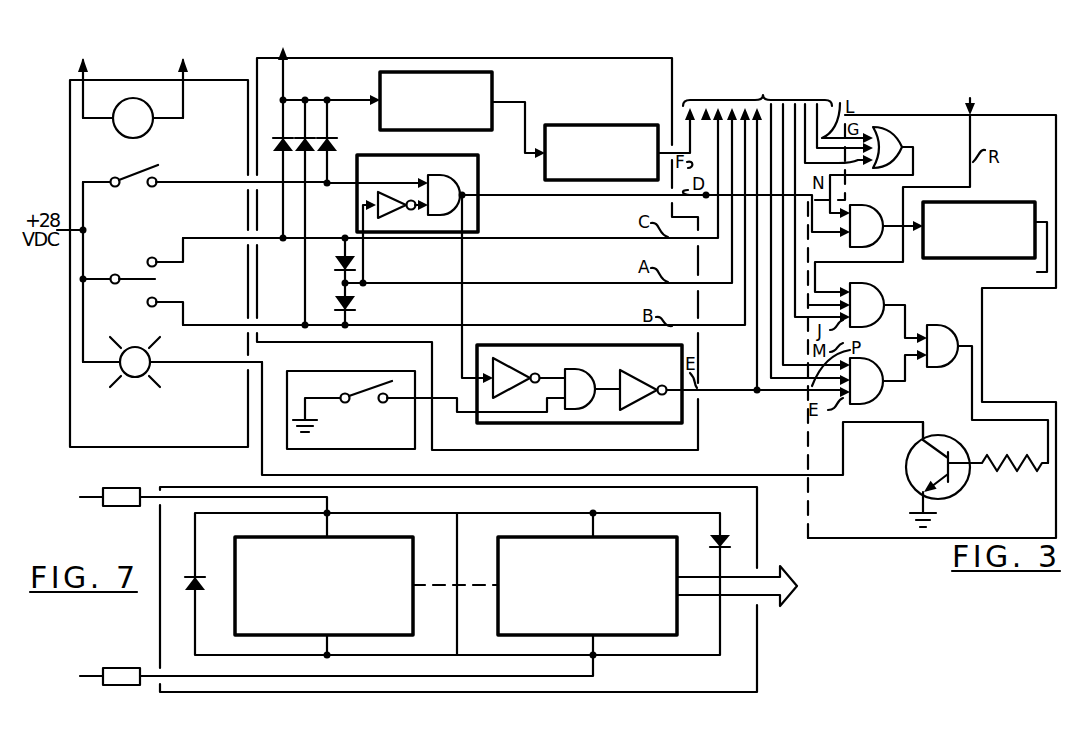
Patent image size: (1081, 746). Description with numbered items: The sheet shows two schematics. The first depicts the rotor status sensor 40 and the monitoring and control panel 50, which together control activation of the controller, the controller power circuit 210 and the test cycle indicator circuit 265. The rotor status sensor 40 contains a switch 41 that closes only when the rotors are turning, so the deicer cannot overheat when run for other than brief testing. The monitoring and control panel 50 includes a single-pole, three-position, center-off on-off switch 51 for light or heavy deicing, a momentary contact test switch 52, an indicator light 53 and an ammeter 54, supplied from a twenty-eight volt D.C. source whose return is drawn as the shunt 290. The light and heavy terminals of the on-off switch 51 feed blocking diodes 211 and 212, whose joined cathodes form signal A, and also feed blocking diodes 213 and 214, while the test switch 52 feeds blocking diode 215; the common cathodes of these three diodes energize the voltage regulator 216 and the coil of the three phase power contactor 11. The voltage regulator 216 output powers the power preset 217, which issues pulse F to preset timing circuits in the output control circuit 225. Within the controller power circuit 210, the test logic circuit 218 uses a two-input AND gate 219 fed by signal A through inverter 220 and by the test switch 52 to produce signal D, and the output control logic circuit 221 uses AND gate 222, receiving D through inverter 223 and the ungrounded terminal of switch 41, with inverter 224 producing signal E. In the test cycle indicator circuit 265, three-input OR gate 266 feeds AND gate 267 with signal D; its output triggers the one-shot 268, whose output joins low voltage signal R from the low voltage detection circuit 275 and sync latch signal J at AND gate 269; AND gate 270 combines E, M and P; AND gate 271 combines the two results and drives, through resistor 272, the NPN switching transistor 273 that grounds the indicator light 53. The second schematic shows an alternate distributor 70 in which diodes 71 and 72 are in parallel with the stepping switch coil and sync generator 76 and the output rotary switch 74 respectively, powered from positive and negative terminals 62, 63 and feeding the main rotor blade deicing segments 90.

In FIG. 3, the monitoring and control panel 50 is at (123, 448).
In FIG. 3, the on-off switch 51 is at (131, 286).
In FIG. 3, the test switch 52 is at (119, 187).
In FIG. 3, the indicator light 53 is at (137, 377).
In FIG. 3, the ammeter 54 is at (149, 130).
In FIG. 3, the rotor status sensor 40 is at (355, 450).
In FIG. 3, the switch 41 is at (355, 401).
In FIG. 3, the controller power circuit 210 is at (702, 411).
In FIG. 3, the blocking diode 211 is at (334, 265).
In FIG. 3, the blocking diode 212 is at (351, 305).
In FIG. 3, the blocking diode 213 is at (276, 141).
In FIG. 3, the blocking diode 214 is at (298, 137).
In FIG. 3, the blocking diode 215 is at (337, 146).
In FIG. 3, the voltage regulator 216 is at (467, 131).
In FIG. 3, the power preset 217 is at (620, 124).
In FIG. 3, the test logic circuit 218 is at (371, 157).
In FIG. 3, the two-input AND gate 219 is at (441, 173).
In FIG. 3, the inverter 220 is at (382, 216).
In FIG. 3, the output control logic circuit 221 is at (541, 346).
In FIG. 3, the two-input AND gate 222 is at (603, 367).
In FIG. 3, the inverter 223 is at (502, 366).
In FIG. 3, the inverter 224 is at (622, 369).
In FIG. 3, the output control circuit 225 is at (771, 213).
In FIG. 3, the test cycle indicator circuit 265 is at (807, 452).
In FIG. 3, the three-input OR gate 266 is at (905, 142).
In FIG. 3, the two-input AND gate 267 is at (851, 206).
In FIG. 3, the one-shot 268 is at (990, 203).
In FIG. 3, the three-input AND gate 269 is at (873, 290).
In FIG. 3, the three-input AND gate 270 is at (862, 404).
In FIG. 3, the two-input AND gate 271 is at (950, 368).
In FIG. 3, the resistor 272 is at (1032, 457).
In FIG. 3, the NPN switching transistor 273 is at (957, 492).
In FIG. 3, the low voltage detection circuit 275 is at (936, 176).
In FIG. 3, the shunt 290 is at (136, 78).
In FIG. 3, the three phase power contactor 11 is at (384, 138).
In FIG. 7, the distributor 70 is at (755, 556).
In FIG. 7, the diode 71 is at (190, 577).
In FIG. 7, the diode 72 is at (726, 537).
In FIG. 7, the output rotary switch 74 is at (550, 637).
In FIG. 7, the stepping switch coil and stepping switch sync generator 76 is at (234, 565).
In FIG. 7, the positive supply terminal 62 is at (127, 507).
In FIG. 7, the negative supply terminal 63 is at (125, 665).
In FIG. 7, the main rotor blade deicing segments 90 is at (867, 584).